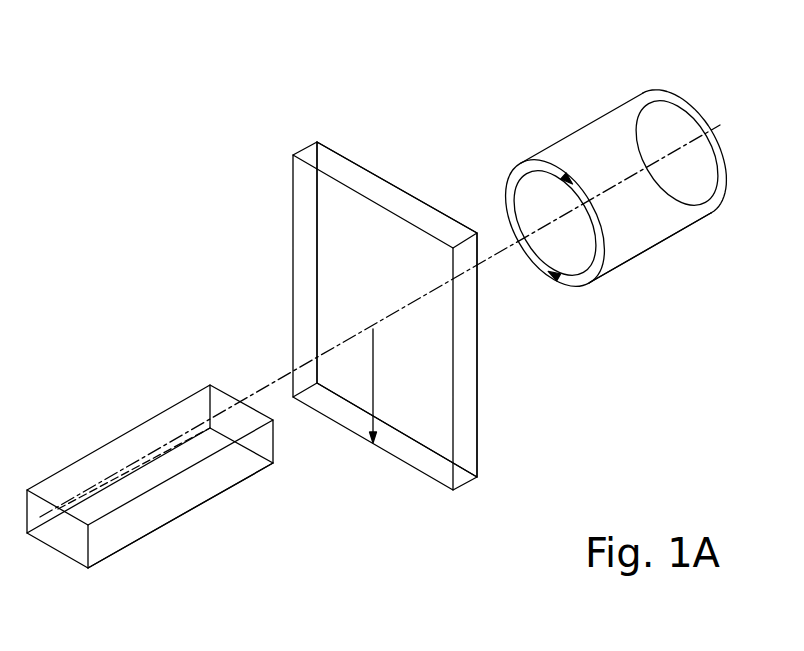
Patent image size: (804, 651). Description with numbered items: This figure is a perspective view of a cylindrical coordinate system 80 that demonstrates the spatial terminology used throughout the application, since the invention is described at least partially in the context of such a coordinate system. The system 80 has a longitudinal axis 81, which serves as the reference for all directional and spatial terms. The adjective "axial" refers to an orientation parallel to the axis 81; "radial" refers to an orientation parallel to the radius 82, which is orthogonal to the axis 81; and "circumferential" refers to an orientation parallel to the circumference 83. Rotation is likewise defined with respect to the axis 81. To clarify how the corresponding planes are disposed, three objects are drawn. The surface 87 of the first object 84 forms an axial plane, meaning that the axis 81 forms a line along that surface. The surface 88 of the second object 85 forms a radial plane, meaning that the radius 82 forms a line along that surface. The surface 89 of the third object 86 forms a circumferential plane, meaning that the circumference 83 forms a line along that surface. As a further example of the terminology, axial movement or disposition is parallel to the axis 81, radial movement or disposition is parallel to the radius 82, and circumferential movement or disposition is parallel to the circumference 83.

The cylindrical coordinate system 80 is at (246, 194).
The longitudinal axis 81 is at (708, 123).
The radius 82 is at (373, 377).
The circumference 83 is at (505, 186).
The object 84 is at (115, 557).
The object 85 is at (497, 487).
The object 86 is at (649, 264).
The surface 87 is at (108, 458).
The surface 88 is at (308, 273).
The surface 89 is at (580, 125).